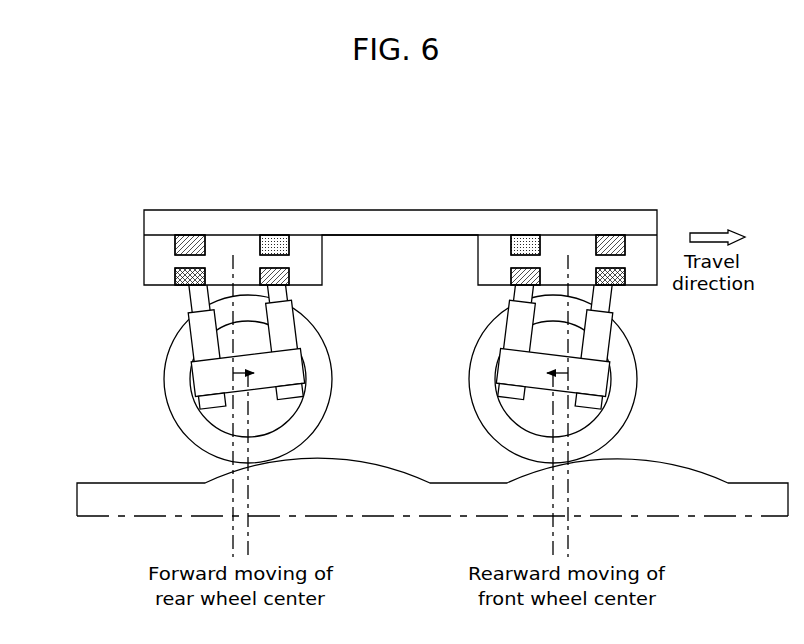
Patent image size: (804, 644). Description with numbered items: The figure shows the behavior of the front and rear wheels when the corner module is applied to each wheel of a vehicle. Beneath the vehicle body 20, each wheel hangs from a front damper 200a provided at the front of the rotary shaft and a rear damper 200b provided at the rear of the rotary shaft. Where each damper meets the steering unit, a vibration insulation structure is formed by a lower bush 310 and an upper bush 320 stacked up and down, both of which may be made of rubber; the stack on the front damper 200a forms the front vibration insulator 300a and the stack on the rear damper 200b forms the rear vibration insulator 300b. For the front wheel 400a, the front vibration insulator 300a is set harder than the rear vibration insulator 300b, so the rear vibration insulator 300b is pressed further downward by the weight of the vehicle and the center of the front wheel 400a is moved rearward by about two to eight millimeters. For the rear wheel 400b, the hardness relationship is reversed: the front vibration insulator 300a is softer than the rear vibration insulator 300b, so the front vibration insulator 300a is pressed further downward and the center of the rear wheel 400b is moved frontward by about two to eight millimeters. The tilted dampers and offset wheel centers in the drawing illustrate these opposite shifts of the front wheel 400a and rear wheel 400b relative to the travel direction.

The vehicle body 20 is at (402, 212).
The front damper 200a is at (294, 303).
The rear damper 200b is at (190, 312).
The front vibration insulator 300a is at (335, 152).
The rear vibration insulator 300b is at (120, 165).
The lower bush 310 is at (185, 273).
The upper bush 320 is at (193, 247).
The front wheel 400a is at (627, 393).
The rear wheel 400b is at (173, 393).